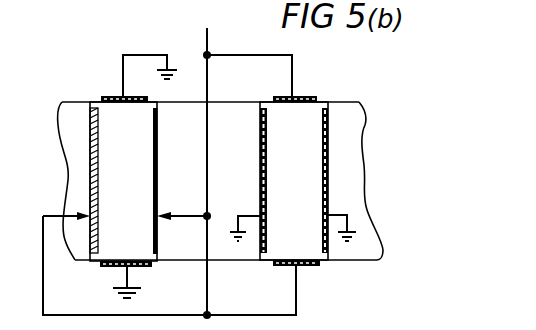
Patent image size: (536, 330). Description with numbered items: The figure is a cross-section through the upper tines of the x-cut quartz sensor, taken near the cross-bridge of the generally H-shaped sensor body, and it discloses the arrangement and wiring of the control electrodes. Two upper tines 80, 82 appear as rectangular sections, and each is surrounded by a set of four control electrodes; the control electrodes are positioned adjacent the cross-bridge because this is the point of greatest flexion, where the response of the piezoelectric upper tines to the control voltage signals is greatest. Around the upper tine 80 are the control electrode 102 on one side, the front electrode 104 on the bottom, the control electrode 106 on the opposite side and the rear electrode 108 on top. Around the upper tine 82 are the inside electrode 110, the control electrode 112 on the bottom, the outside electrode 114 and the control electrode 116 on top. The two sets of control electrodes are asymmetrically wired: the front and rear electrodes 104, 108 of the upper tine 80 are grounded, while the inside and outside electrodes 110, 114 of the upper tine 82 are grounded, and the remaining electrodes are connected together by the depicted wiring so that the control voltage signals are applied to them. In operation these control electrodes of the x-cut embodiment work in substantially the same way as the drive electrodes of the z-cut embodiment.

The upper tine 80 is at (123, 181).
The upper tine 82 is at (294, 181).
The control electrode 102 is at (88, 138).
The front electrode 104 is at (117, 265).
The control electrode 106 is at (157, 120).
The rear electrode 108 is at (110, 97).
The inside electrode 110 is at (261, 145).
The control electrode 112 is at (308, 267).
The outside electrode 114 is at (328, 137).
The control electrode 116 is at (311, 96).